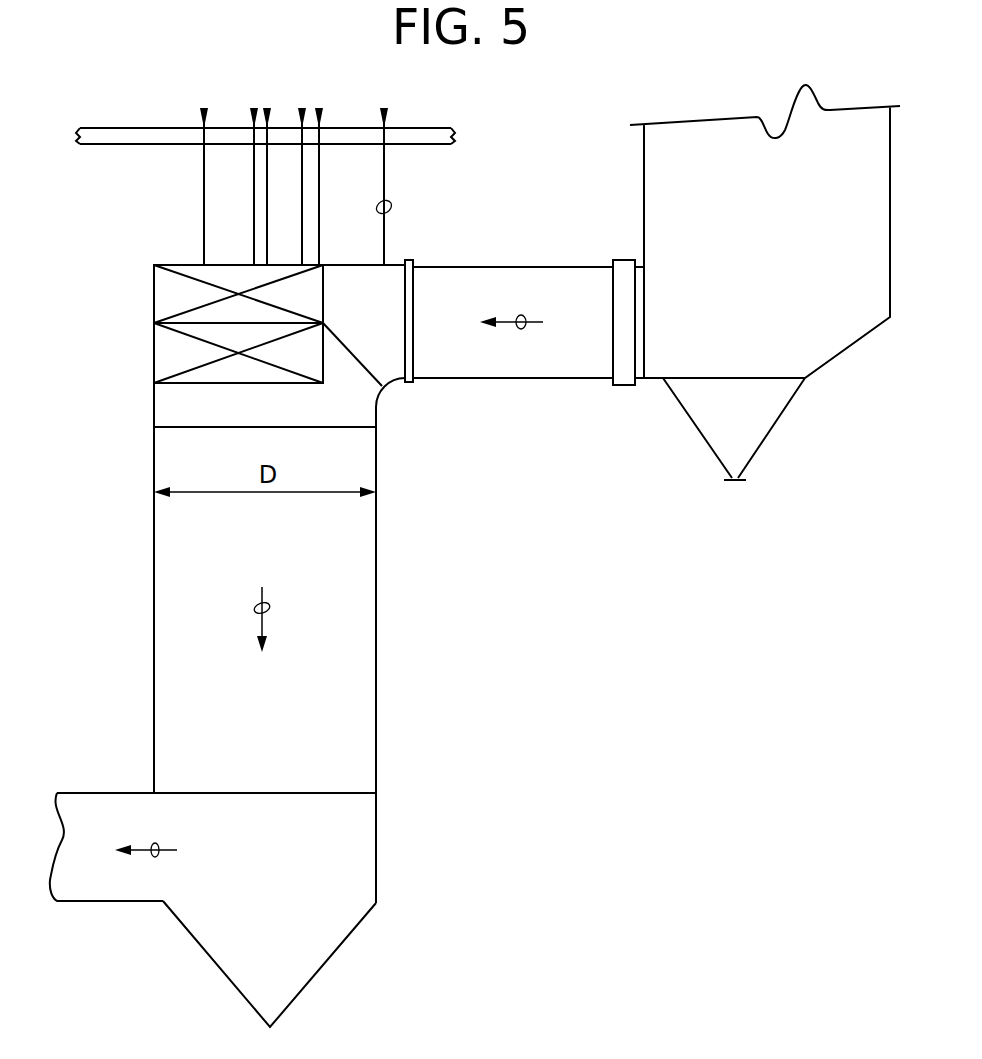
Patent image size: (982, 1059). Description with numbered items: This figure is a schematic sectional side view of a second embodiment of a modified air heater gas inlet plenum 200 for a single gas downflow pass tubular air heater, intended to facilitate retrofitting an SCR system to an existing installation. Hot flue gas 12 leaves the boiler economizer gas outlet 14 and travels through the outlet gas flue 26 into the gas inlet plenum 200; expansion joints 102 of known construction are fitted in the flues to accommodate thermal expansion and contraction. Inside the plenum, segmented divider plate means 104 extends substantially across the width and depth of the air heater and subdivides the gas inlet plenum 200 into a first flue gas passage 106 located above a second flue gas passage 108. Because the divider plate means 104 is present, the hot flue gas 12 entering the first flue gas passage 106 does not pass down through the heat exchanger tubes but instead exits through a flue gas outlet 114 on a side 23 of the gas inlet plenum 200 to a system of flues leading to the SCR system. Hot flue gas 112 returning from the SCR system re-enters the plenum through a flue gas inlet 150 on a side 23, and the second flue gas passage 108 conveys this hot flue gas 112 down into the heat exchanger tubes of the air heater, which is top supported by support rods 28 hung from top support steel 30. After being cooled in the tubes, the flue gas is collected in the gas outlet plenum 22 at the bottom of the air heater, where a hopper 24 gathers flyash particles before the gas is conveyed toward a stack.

The hot flue gas 12 is at (524, 316).
The boiler economizer gas outlet 14 is at (790, 270).
The gas outlet plenum 22 is at (368, 845).
The side wall 23 is at (168, 410).
The hopper 24 is at (318, 942).
The outlet gas flue 26 is at (452, 280).
The support rods 28 is at (392, 203).
The top support steel 30 is at (415, 130).
The expansion joint 102 is at (408, 388).
The divider plate means 104 is at (352, 352).
The first flue gas passage 106 is at (362, 272).
The second flue gas passage 108 is at (362, 402).
The hot flue gas 112 is at (268, 605).
The flue gas outlet 114 is at (168, 298).
The flue gas inlet 150 is at (165, 355).
The gas inlet plenum 200 is at (520, 520).